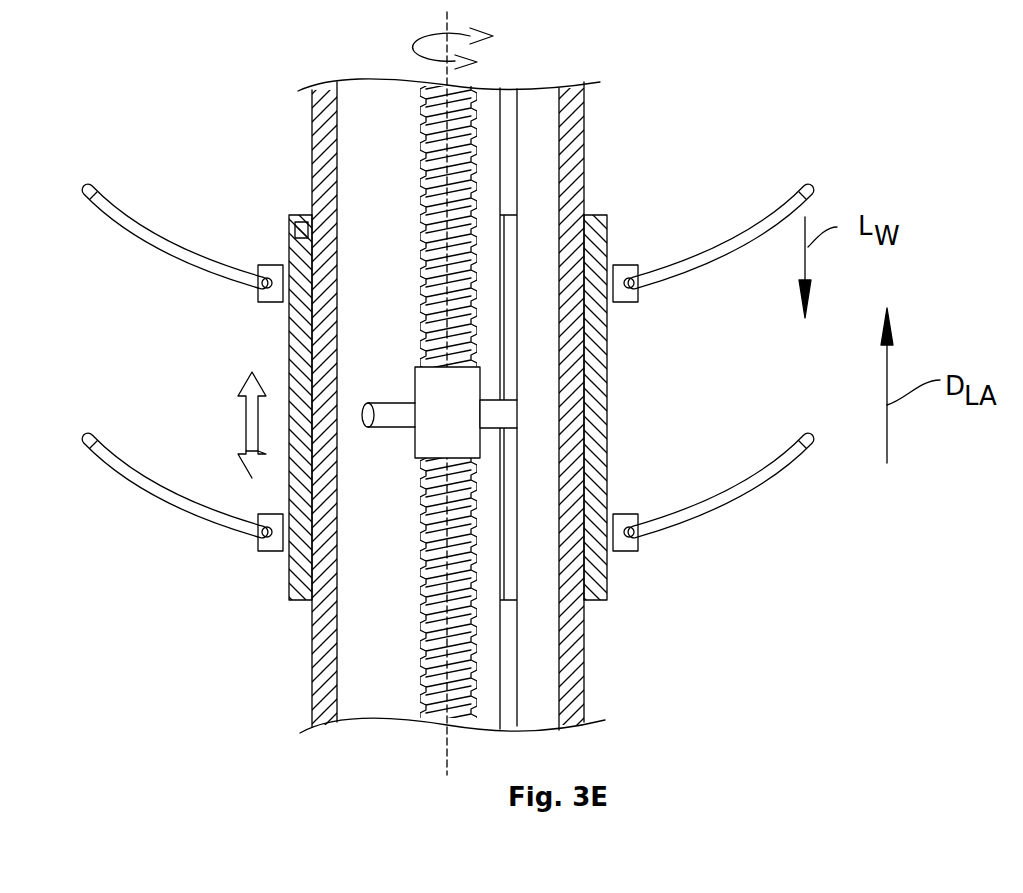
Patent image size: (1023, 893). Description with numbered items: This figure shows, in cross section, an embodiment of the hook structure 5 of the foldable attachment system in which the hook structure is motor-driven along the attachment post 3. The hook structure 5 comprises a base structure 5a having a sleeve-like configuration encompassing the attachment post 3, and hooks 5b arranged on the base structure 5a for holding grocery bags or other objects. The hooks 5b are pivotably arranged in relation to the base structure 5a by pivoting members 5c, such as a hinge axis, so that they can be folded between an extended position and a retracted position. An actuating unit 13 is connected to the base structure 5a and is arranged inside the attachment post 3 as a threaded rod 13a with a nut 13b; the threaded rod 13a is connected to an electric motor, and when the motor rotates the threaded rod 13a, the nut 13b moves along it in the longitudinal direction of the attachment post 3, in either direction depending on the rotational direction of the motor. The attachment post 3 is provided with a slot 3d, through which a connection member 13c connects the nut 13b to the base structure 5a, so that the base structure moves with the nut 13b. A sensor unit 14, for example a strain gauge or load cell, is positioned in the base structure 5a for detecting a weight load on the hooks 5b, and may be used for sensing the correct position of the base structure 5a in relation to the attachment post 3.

The attachment post 3 is at (587, 142).
The slot 3d is at (507, 128).
The hook structure 5 is at (221, 121).
The base structure 5a is at (608, 402).
The hook 5b is at (157, 247).
The pivoting member 5c is at (262, 300).
The actuating unit 13 is at (402, 646).
The threaded rod 13a is at (420, 128).
The nut 13b is at (465, 442).
The connection member 13c is at (360, 414).
The sensor unit 14 is at (290, 225).